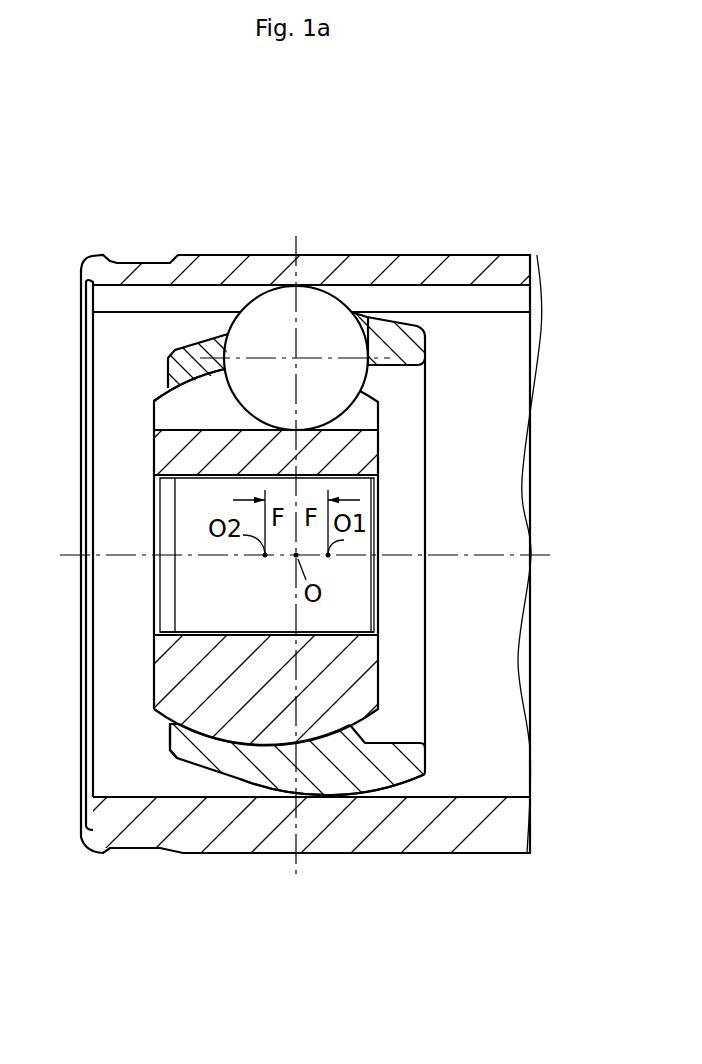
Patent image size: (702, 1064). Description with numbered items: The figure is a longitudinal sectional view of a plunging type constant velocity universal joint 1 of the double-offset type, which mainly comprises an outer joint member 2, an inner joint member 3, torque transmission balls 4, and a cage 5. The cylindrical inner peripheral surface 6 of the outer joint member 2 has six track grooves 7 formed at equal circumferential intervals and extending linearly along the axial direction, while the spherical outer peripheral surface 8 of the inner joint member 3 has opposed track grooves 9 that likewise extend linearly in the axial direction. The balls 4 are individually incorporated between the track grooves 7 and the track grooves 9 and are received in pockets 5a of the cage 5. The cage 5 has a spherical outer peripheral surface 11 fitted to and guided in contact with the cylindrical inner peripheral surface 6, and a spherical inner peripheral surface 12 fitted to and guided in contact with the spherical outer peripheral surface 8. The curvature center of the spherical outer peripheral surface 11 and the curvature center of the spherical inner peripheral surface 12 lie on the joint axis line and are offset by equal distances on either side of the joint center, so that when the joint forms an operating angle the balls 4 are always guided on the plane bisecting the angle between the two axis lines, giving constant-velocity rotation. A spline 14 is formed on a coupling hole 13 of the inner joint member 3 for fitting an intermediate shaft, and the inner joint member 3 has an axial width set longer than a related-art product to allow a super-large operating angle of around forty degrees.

The plunging type constant velocity universal joint 1 is at (343, 190).
The outer joint member 2 is at (204, 253).
The inner joint member 3 is at (380, 450).
The torque transmission balls 4 is at (273, 326).
The cage 5 is at (428, 347).
The pockets 5a is at (356, 313).
The cylindrical inner peripheral surface 6 is at (447, 797).
The track grooves 7 is at (442, 288).
The spherical outer peripheral surface 8 is at (207, 723).
The track grooves 9 is at (193, 427).
The spherical outer peripheral surface 11 is at (328, 555).
The spherical inner peripheral surface 12 is at (265, 555).
The coupling hole 13 is at (189, 484).
The spline 14 is at (213, 632).